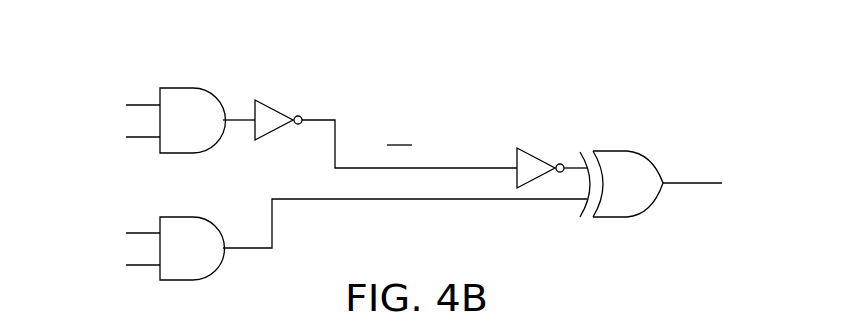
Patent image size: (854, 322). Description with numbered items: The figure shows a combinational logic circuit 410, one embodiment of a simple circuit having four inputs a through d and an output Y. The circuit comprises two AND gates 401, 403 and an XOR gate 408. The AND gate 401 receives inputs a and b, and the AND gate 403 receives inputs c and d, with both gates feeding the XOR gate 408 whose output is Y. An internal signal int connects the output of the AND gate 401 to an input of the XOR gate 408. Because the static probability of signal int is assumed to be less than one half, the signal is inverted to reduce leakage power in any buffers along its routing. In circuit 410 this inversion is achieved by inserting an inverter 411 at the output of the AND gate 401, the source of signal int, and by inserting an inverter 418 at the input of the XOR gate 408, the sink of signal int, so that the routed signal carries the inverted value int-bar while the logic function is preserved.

The circuit 410 is at (98, 52).
The AND gate 401 is at (210, 130).
The AND gate 403 is at (210, 257).
The inverter 411 is at (278, 111).
The inverter 418 is at (537, 158).
The XOR gate 408 is at (650, 194).